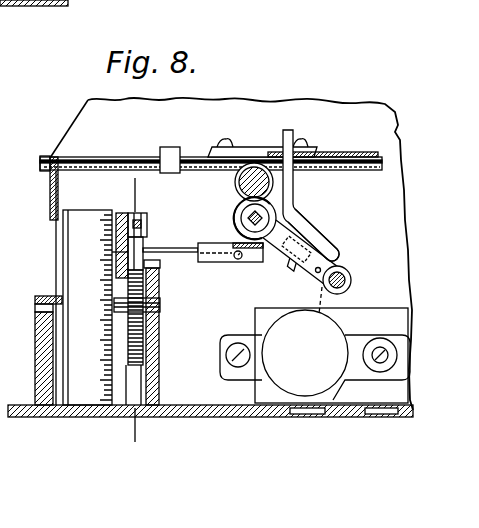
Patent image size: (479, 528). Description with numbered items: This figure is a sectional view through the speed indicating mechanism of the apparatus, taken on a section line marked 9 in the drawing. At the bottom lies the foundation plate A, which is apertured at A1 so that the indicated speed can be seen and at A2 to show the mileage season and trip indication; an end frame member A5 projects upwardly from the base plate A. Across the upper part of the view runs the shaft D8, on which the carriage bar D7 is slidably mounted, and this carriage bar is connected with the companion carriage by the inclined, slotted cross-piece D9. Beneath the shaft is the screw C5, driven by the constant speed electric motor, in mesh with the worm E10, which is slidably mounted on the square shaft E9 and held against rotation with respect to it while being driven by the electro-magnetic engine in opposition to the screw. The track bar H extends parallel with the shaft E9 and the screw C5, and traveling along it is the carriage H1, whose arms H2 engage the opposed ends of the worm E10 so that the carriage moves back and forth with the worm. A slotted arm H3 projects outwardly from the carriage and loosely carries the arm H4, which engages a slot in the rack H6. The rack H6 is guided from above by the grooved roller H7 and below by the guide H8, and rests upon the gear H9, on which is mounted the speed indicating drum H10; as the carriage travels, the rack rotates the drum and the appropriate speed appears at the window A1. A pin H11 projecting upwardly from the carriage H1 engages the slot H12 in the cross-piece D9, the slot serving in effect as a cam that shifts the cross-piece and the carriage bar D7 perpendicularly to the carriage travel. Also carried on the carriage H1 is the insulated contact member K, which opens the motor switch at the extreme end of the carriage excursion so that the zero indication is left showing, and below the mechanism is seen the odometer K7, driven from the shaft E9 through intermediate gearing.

The end frame member A5 is at (93, 120).
The foundation plate A is at (218, 413).
The aperture A1 is at (82, 413).
The apertures A2 is at (373, 414).
The carriage bar D7 is at (182, 147).
The shaft D8 is at (102, 157).
The inclined slotted cross-piece D9 is at (251, 155).
The track bar H is at (351, 282).
The carriage H1 is at (327, 241).
The arms H2 is at (247, 220).
The slotted arm H3 is at (267, 262).
The arm H4 is at (177, 252).
The rack H6 is at (112, 252).
The grooved roller H7 is at (144, 218).
The guide H8 is at (127, 213).
The gear H9 is at (128, 368).
The speed indicating drum H10 is at (93, 392).
The pin H11 is at (288, 181).
The slot H12 is at (333, 139).
The square shaft E9 is at (244, 227).
The worm E10 is at (272, 208).
The screw C5 is at (240, 186).
The insulated contact member K is at (305, 353).
The odometer K7 is at (287, 368).
The section line 9 is at (142, 192).